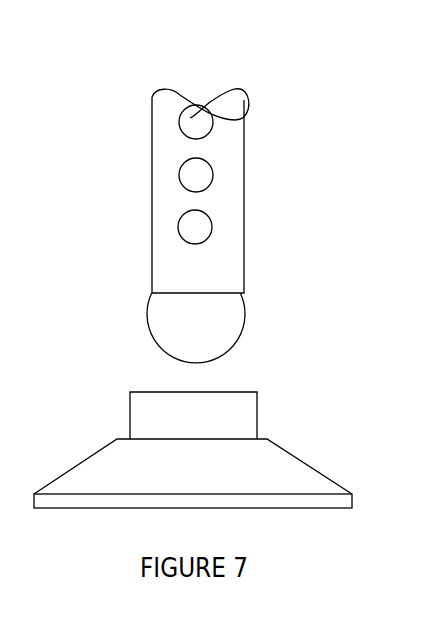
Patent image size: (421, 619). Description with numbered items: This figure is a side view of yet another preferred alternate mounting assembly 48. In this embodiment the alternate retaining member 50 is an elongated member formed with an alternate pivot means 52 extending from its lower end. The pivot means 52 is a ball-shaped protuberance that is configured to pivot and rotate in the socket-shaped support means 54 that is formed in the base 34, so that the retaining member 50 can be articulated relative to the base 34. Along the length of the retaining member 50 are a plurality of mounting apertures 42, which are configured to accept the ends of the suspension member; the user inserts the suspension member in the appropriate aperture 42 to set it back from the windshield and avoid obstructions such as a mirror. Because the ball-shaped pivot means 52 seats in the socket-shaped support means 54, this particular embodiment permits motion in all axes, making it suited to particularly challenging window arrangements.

The alternate mounting assembly 48 is at (193, 191).
The alternate retaining member 50 is at (233, 192).
The mounting apertures 42 is at (183, 217).
The pivot means 52 is at (167, 327).
The base 34 is at (95, 468).
The support means 54 is at (248, 410).